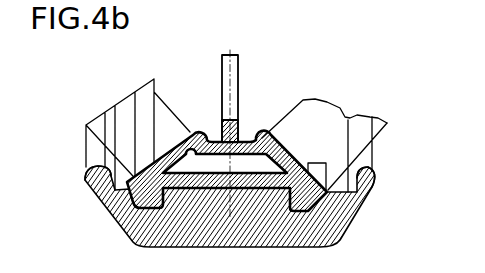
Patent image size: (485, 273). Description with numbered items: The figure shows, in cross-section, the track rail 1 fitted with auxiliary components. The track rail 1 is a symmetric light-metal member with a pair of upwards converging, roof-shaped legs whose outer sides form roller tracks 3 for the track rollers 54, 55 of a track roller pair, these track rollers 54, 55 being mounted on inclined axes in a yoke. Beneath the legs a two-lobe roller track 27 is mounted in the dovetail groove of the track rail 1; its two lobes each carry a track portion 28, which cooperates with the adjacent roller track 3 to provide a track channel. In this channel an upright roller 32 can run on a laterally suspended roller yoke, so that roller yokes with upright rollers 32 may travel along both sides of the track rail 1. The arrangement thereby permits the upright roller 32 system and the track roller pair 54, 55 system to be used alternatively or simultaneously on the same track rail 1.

The track rail 1 is at (316, 134).
The roller track 3 is at (137, 170).
The two-lobe roller track 27 is at (230, 211).
The track portion 28 is at (97, 171).
The upright roller 32 is at (95, 160).
The track roller 54 is at (172, 123).
The track roller 55 is at (311, 118).